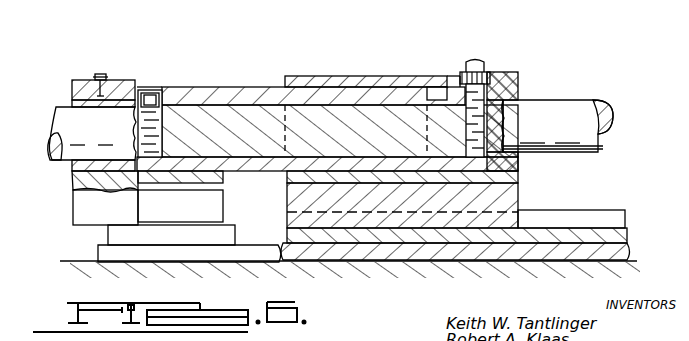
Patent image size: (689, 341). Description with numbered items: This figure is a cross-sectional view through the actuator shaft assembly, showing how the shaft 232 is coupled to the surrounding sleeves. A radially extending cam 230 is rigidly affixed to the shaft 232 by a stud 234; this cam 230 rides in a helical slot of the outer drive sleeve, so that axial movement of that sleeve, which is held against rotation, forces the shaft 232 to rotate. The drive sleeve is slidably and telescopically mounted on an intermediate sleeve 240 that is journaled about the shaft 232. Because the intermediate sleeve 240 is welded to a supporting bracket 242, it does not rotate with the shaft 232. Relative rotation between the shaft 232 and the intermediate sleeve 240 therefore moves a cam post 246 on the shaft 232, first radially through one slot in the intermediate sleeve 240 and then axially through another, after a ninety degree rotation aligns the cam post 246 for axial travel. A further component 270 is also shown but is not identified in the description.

The cam 230 is at (492, 69).
The shaft 232 is at (572, 100).
The stud 234 is at (487, 137).
The intermediate sleeve 240 is at (240, 88).
The supporting bracket 242 is at (247, 197).
The cam post 246 is at (143, 92).
The cover plate 270 is at (366, 76).